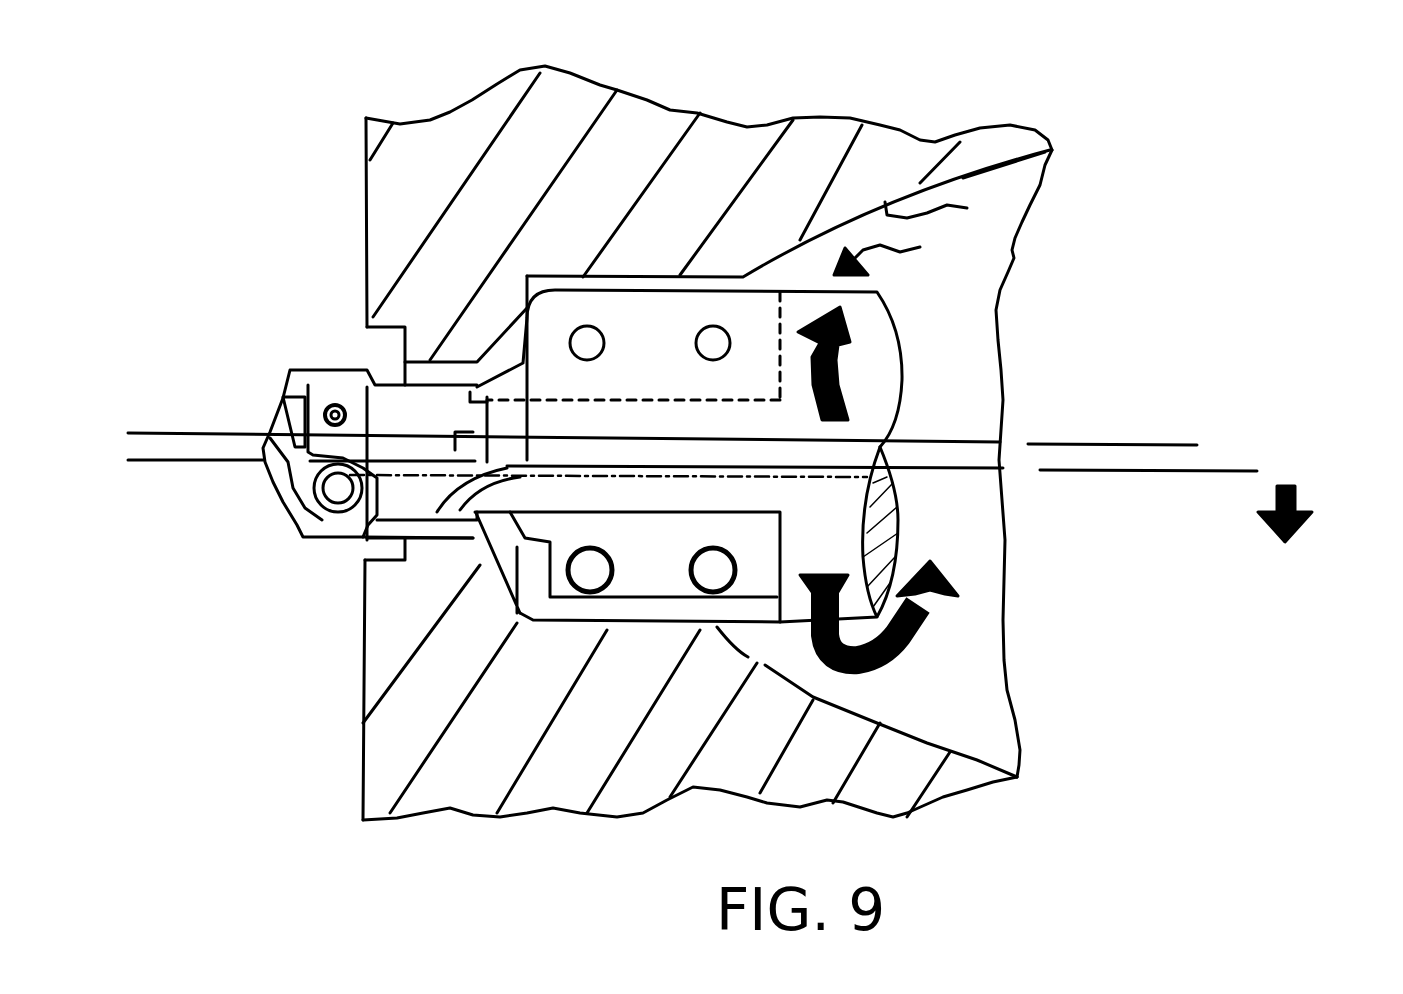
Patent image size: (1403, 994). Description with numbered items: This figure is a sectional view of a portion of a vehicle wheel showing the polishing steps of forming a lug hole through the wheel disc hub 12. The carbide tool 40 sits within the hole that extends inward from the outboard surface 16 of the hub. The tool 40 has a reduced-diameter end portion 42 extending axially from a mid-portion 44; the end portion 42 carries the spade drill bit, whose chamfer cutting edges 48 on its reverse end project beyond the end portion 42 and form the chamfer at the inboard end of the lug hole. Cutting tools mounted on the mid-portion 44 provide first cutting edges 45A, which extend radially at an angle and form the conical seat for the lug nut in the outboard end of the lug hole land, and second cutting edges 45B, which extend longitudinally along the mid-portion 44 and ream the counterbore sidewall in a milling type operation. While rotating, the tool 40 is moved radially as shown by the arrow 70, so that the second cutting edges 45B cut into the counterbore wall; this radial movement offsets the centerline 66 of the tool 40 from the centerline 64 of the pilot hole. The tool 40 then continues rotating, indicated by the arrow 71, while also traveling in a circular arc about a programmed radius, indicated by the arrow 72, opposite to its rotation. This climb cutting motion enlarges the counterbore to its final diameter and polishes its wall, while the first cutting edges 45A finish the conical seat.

The wheel disc hub 12 is at (720, 137).
The outboard surface 16 is at (957, 210).
The tool 40 is at (932, 293).
The end portion 42 is at (262, 511).
The mid-portion 44 is at (902, 250).
The first cutting edges 45A is at (540, 568).
The second cutting edges 45B is at (637, 618).
The chamfer cutting edges 48 is at (363, 553).
The centerline of the lug hole 64 is at (1140, 443).
The centerline of the tool 66 is at (1133, 471).
The arrow 70 is at (1300, 497).
The arrow 71 is at (842, 400).
The arrow 72 is at (873, 660).